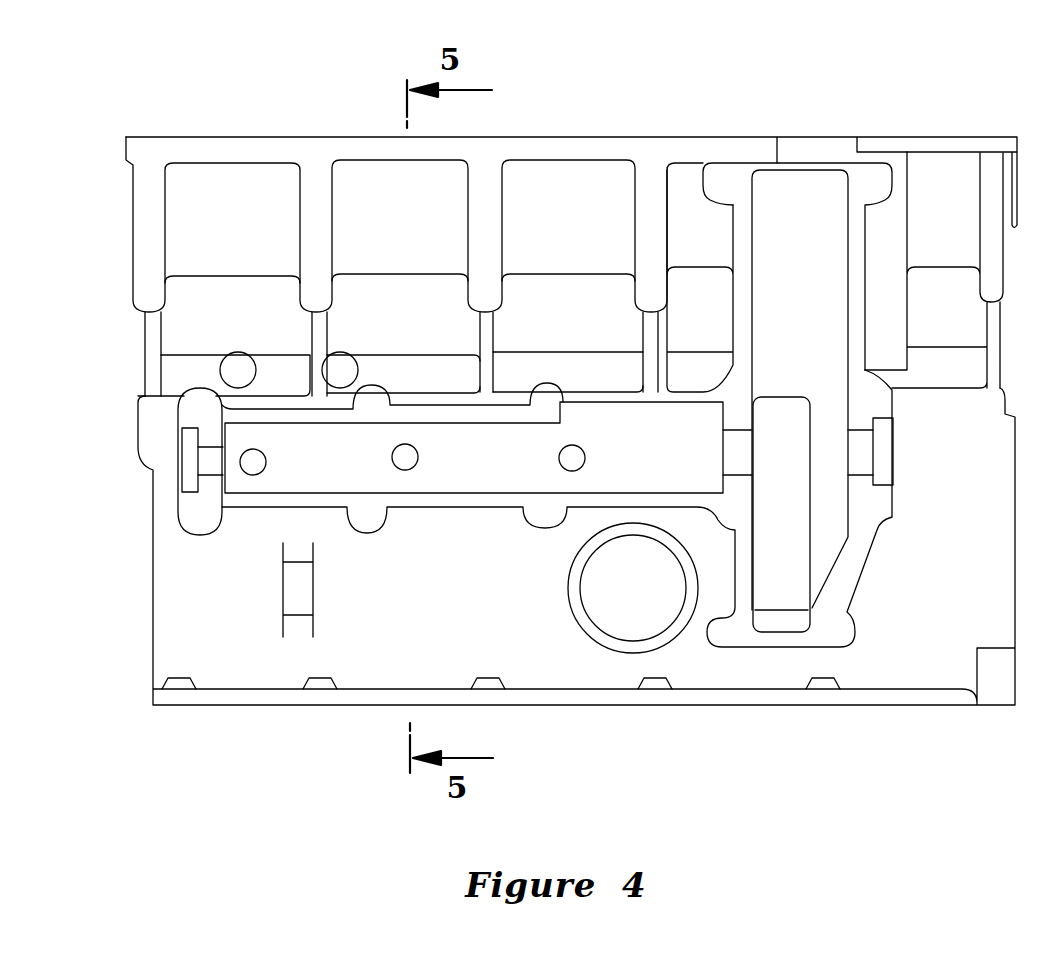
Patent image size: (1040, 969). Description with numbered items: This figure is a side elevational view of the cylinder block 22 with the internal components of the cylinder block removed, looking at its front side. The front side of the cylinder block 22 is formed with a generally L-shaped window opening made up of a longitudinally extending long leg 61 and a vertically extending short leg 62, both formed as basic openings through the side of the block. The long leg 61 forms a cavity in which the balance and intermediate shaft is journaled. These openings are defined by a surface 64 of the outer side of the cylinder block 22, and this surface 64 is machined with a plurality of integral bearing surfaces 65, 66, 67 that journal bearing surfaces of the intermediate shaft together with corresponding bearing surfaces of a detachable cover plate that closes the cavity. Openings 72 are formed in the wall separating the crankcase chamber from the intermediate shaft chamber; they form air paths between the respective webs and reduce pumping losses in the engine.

The cylinder block 22 is at (942, 110).
The long leg 61 is at (468, 492).
The short leg 62 is at (840, 398).
The surface 64 is at (197, 530).
The bearing surface 65 is at (200, 470).
The bearing surface 66 is at (737, 472).
The bearing surface 67 is at (863, 470).
The openings 72 is at (614, 462).